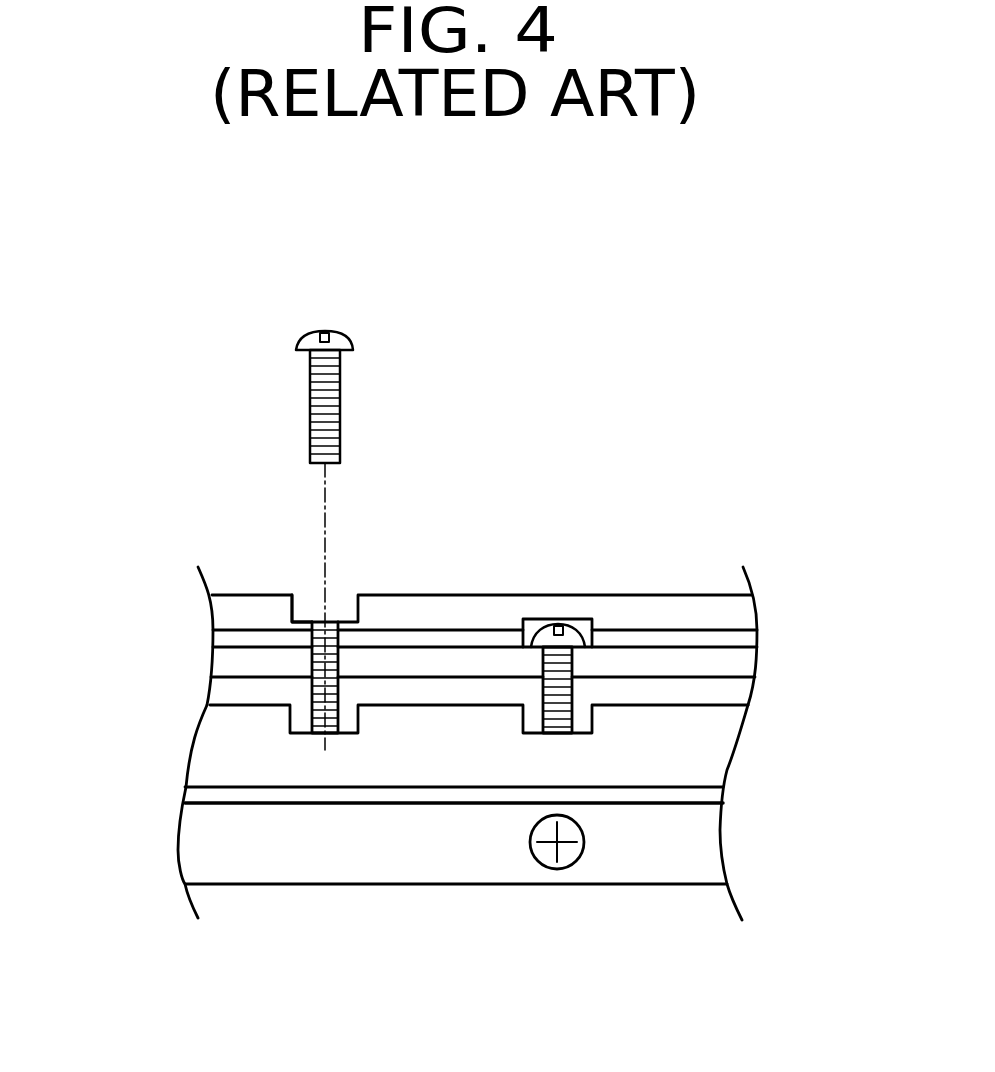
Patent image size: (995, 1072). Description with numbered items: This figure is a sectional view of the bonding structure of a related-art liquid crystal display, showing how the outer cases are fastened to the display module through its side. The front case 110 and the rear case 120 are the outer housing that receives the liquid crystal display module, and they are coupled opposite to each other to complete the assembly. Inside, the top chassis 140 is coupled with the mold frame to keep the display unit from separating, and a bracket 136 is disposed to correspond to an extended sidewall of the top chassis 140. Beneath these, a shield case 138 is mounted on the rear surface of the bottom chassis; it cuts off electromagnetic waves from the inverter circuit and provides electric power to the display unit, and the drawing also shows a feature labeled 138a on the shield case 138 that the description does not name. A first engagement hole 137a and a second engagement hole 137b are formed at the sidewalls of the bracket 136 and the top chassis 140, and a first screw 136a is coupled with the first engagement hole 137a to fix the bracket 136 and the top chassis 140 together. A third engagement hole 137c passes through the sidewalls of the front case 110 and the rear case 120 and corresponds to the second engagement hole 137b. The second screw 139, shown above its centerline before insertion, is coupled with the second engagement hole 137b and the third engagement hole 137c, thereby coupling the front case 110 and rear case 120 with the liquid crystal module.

The front case 110 is at (232, 636).
The rear case 120 is at (232, 603).
The bracket 136 is at (735, 691).
The first screw 136a is at (568, 623).
The first engagement hole 137a is at (577, 662).
The second engagement hole 137b is at (348, 690).
The third engagement hole 137c is at (300, 596).
The shield case 138 is at (700, 842).
The hole of stand base 138a is at (568, 852).
The second screw 139 is at (336, 340).
The top chassis 140 is at (746, 661).